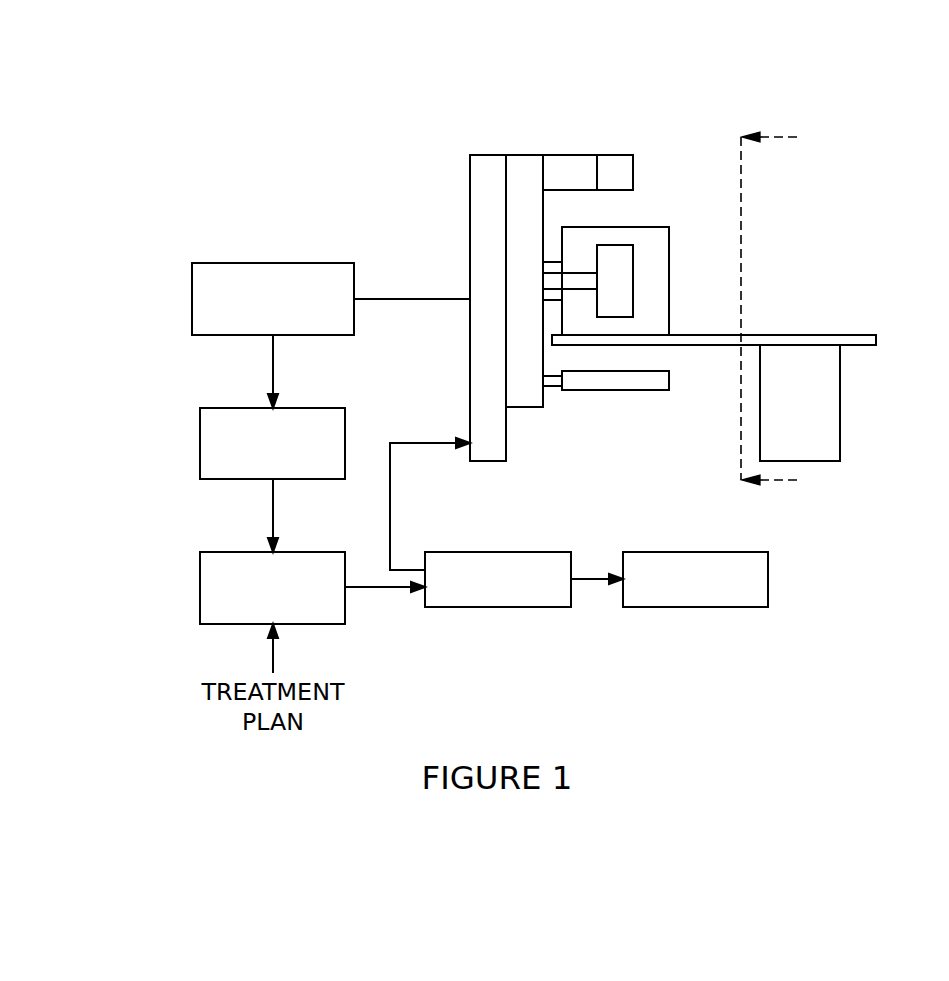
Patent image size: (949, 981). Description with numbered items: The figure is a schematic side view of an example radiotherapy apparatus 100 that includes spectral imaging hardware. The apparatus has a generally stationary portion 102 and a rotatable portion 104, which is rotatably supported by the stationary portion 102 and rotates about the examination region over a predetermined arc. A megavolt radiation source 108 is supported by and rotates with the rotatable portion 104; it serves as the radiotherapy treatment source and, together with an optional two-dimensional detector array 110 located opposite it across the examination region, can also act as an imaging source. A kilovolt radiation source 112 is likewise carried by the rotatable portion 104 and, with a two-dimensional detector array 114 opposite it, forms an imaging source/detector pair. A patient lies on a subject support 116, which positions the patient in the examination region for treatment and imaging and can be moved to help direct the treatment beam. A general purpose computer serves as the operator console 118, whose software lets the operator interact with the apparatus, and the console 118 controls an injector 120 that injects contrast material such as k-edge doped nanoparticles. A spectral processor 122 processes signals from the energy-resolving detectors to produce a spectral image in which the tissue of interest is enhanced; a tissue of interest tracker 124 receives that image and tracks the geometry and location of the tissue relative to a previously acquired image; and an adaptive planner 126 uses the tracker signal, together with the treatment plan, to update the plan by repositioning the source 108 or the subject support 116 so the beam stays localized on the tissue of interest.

The radiotherapy apparatus 100 is at (836, 54).
The generally stationary portion 102 is at (470, 188).
The rotatable portion 104 is at (525, 155).
The radiation source 108 is at (615, 155).
The detector array 110 is at (647, 390).
The radiation source 112 is at (633, 280).
The detector array 114 is at (616, 227).
The subject support 116 is at (760, 334).
The operator console 118 is at (498, 607).
The injector 120 is at (695, 607).
The spectral processor 122 is at (270, 263).
The tissue of interest tracker 124 is at (247, 408).
The adaptive planner 126 is at (247, 552).